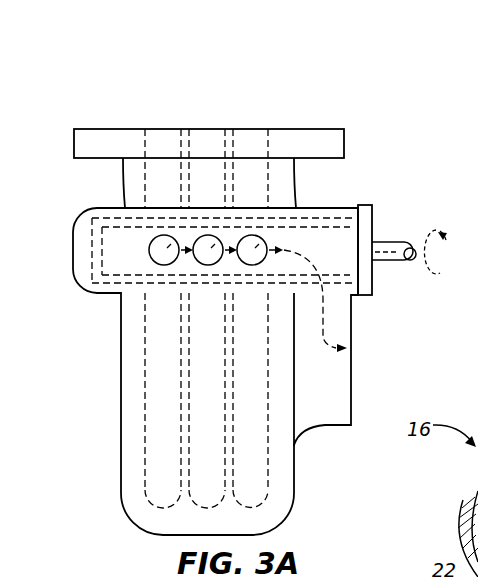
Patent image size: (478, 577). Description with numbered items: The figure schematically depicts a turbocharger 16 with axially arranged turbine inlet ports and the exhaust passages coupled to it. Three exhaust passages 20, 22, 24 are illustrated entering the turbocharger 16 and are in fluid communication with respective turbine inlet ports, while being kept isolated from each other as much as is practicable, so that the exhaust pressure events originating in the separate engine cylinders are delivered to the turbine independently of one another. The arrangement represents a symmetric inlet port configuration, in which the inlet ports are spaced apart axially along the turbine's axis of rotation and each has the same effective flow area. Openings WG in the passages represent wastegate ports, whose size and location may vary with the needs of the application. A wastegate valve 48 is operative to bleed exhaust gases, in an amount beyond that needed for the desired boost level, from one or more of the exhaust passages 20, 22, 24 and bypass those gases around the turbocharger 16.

The turbocharger 16 is at (114, 68).
The exhaust passage 20 is at (165, 110).
The exhaust passage 22 is at (208, 110).
The exhaust passage 24 is at (252, 110).
The wastegate valve 48 is at (402, 224).
The wastegate ports WG is at (165, 235).